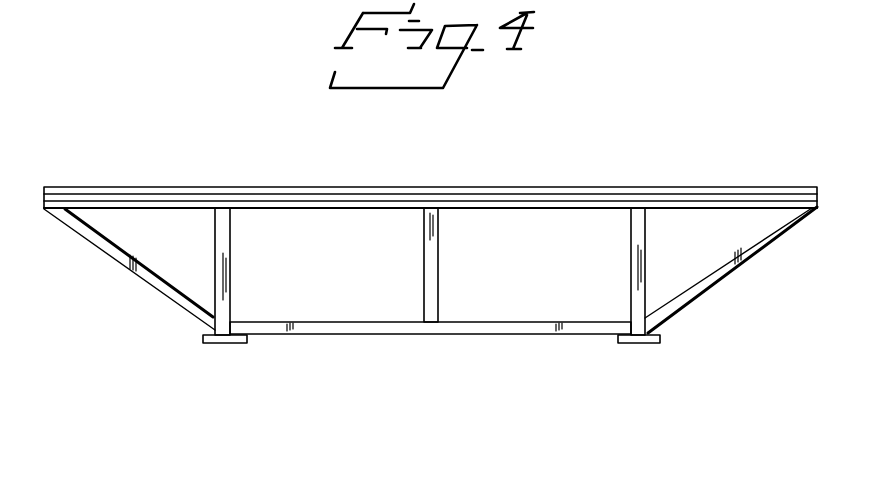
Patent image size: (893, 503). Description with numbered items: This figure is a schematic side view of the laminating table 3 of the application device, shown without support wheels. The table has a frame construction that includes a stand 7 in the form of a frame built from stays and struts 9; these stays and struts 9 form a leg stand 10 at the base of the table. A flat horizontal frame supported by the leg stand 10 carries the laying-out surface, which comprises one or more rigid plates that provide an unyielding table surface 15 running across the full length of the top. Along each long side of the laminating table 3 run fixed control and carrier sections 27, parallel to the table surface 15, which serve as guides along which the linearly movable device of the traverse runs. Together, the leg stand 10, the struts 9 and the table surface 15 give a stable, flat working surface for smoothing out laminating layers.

The laminating table 3 is at (349, 185).
The table surface 15 is at (528, 183).
The control and carrier sections 27 is at (685, 198).
The stand 7 is at (172, 312).
The stays and struts 9 is at (430, 268).
The leg stand 10 is at (315, 342).